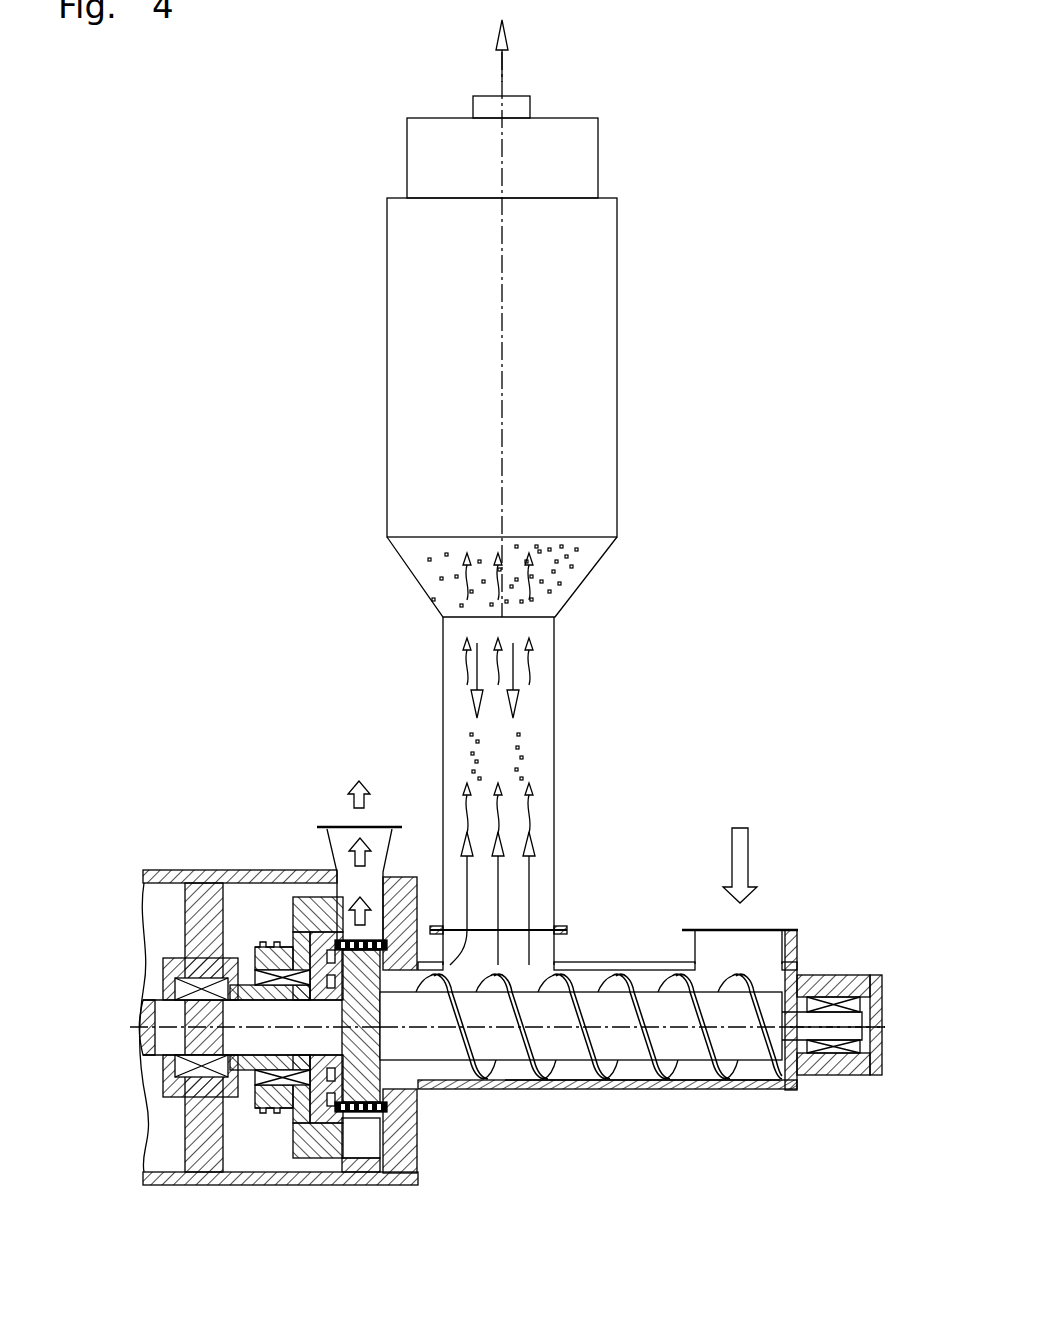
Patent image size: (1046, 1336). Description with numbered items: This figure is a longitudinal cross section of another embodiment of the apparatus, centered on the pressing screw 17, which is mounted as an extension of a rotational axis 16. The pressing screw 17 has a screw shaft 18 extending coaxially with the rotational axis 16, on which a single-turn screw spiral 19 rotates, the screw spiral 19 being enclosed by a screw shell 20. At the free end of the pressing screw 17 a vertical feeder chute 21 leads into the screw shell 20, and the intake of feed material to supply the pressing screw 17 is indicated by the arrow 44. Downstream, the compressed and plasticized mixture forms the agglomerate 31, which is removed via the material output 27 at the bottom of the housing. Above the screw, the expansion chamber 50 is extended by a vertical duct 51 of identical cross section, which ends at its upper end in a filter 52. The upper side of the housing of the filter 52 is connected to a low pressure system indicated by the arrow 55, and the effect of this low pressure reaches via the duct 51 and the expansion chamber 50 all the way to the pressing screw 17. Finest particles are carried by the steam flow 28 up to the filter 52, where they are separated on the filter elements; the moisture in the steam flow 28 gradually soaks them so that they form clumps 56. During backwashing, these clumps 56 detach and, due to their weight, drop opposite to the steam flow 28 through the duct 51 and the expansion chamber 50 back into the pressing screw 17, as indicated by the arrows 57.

The rotational axis 16 is at (778, 1089).
The pressing screw 17 is at (652, 1148).
The screw shaft 18 is at (605, 1089).
The screw spiral 19 is at (547, 1089).
The screw shell 20 is at (718, 1089).
The feeder chute 21 is at (775, 928).
The material output 27 is at (331, 850).
The steam flow 28 is at (465, 672).
The agglomerate 31 is at (353, 787).
The arrow 44 is at (741, 862).
The expansion chamber 50 is at (557, 957).
The vertical duct 51 is at (553, 730).
The filter 52 is at (345, 326).
The arrow 55 is at (503, 78).
The clumps 56 is at (553, 593).
The arrows 57 is at (517, 702).